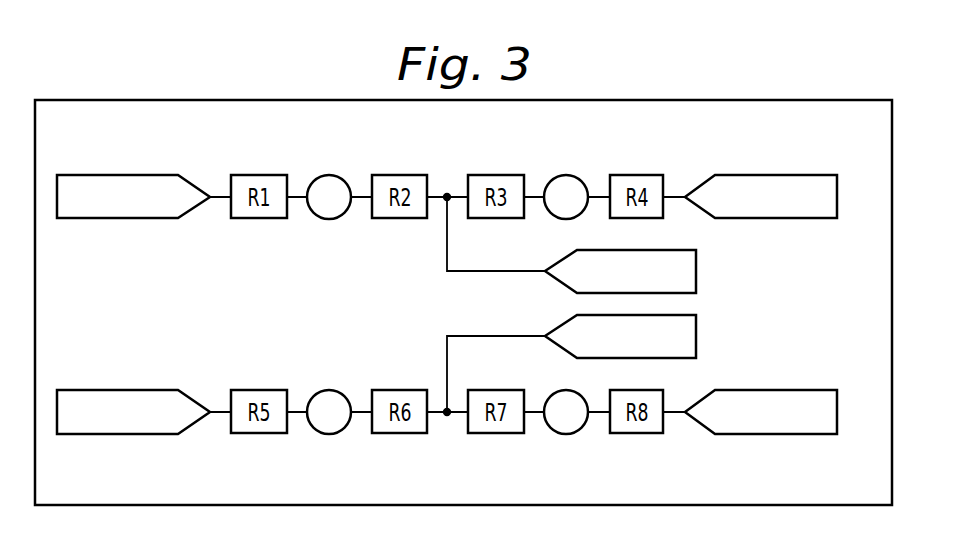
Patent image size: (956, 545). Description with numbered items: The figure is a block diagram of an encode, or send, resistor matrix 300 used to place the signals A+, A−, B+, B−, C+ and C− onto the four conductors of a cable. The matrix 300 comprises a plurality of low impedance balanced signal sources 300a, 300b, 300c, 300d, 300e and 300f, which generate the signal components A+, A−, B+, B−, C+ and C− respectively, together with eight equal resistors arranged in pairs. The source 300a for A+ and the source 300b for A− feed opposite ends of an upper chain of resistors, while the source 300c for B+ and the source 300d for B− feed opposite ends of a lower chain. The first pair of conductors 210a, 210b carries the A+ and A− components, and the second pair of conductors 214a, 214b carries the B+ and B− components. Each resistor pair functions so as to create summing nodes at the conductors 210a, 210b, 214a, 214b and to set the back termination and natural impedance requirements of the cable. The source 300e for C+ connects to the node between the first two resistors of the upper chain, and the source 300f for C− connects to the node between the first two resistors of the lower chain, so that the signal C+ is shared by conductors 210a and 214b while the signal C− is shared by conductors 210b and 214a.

The encode resistor matrix 300 is at (663, 100).
The low impedance balanced signal source 300a is at (108, 175).
The low impedance balanced signal source 300b is at (785, 175).
The low impedance balanced signal source 300c is at (110, 390).
The low impedance balanced signal source 300d is at (793, 434).
The low impedance balanced signal source 300e is at (697, 269).
The low impedance balanced signal source 300f is at (697, 337).
The conductor 210a is at (327, 175).
The conductor 210b is at (573, 434).
The conductor 214a is at (327, 434).
The conductor 214b is at (570, 175).